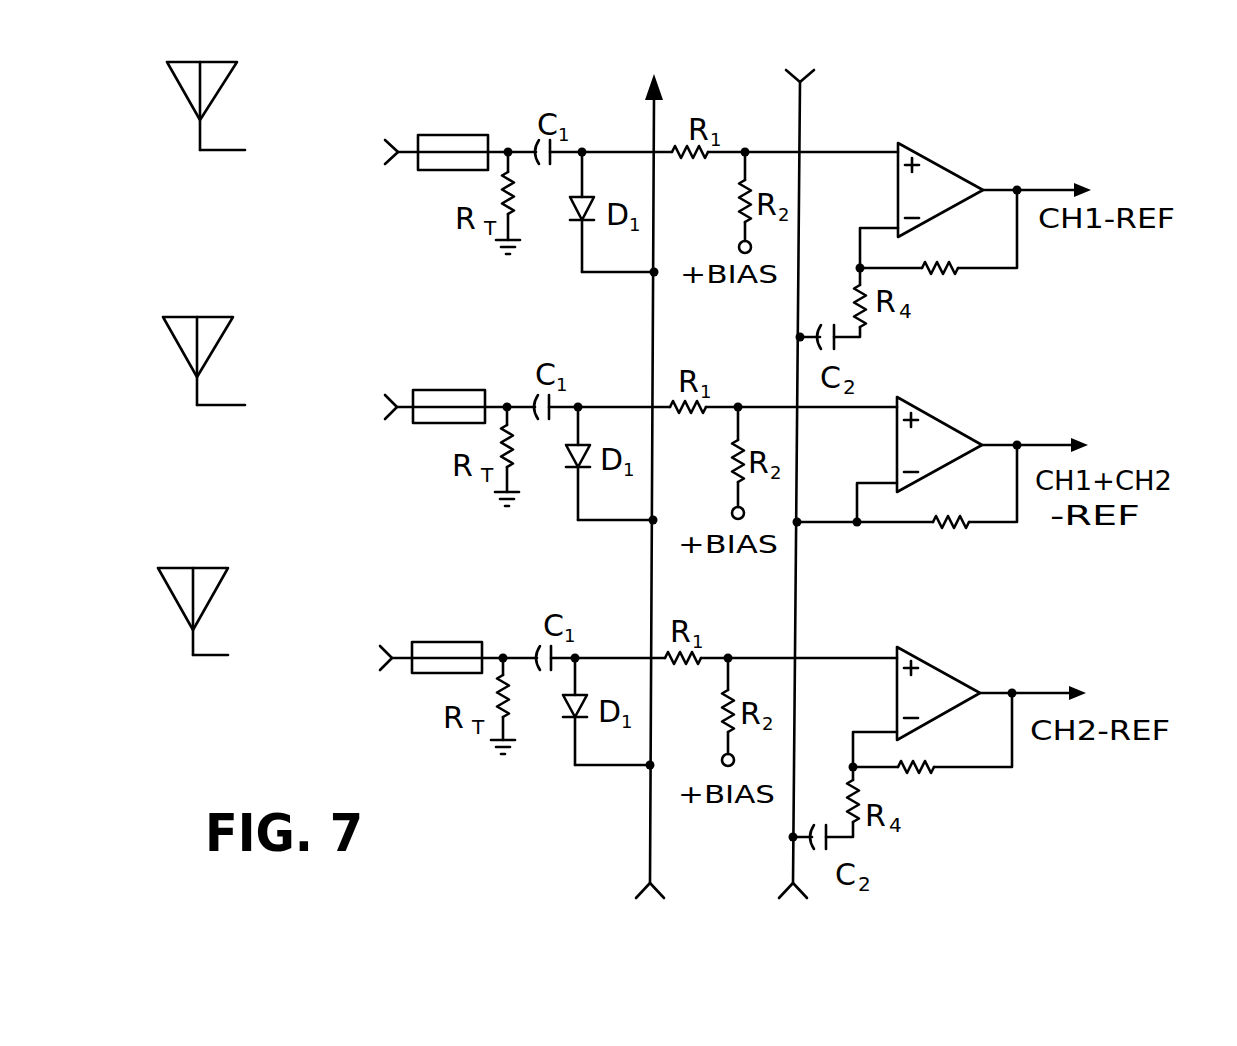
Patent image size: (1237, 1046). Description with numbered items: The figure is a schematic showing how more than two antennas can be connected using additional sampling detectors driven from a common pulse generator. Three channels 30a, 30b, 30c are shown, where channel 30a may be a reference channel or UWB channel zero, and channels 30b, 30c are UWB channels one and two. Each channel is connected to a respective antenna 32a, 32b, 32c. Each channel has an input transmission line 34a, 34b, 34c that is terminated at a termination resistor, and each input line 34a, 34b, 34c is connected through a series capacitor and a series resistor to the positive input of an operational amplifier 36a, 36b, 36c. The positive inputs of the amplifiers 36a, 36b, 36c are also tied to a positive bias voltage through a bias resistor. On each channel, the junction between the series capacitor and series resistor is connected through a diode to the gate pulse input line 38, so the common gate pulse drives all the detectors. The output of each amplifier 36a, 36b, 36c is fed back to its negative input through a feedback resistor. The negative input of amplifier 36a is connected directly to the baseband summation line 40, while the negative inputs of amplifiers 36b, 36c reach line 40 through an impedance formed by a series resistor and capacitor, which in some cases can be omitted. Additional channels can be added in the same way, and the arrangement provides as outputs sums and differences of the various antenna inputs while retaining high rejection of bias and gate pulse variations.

The channel 30a is at (350, 336).
The channel 30b is at (392, 106).
The channel 30c is at (345, 612).
The antenna 32a is at (194, 380).
The antenna 32b is at (199, 122).
The antenna 32c is at (190, 633).
The input transmission line 34a is at (452, 390).
The input transmission line 34b is at (455, 135).
The input transmission line 34c is at (452, 642).
The operational amplifier 36a is at (937, 415).
The operational amplifier 36b is at (938, 160).
The operational amplifier 36c is at (954, 631).
The gate pulse input line 38 is at (647, 814).
The baseband summation line 40 is at (789, 867).